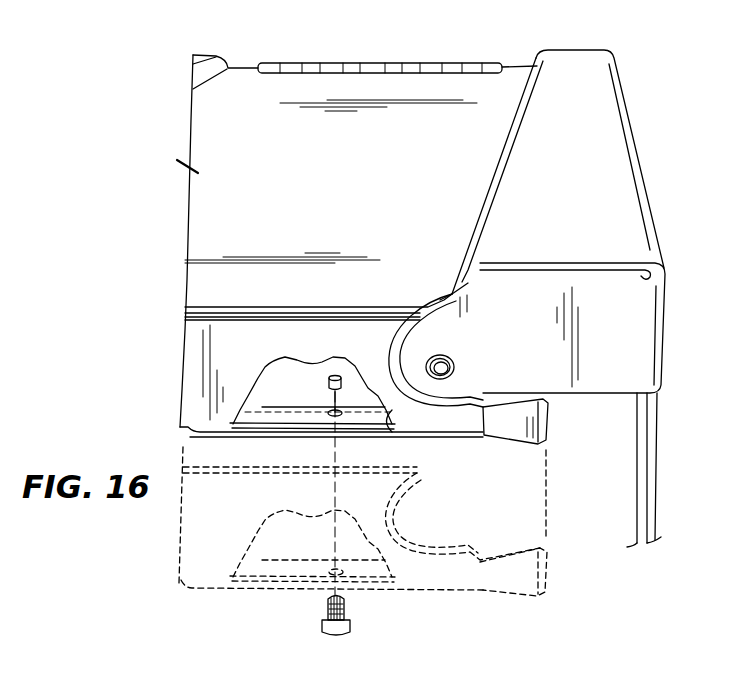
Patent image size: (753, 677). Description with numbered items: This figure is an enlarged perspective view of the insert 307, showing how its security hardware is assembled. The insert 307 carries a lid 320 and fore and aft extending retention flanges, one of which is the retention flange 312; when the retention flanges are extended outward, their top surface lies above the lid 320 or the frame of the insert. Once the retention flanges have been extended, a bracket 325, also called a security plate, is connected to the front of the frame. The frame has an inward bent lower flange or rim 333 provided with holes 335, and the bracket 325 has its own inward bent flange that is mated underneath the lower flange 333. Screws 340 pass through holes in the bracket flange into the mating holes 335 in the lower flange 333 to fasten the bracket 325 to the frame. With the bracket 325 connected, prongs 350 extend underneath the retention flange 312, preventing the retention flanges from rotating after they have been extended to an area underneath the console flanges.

The insert 307 is at (362, 32).
The lid 320 is at (197, 172).
The retention flange 312 is at (663, 308).
The bracket 325 is at (232, 430).
The lower flange 333 is at (350, 437).
The holes 335 is at (333, 415).
The prongs 350 is at (541, 425).
The screws 340 is at (326, 613).